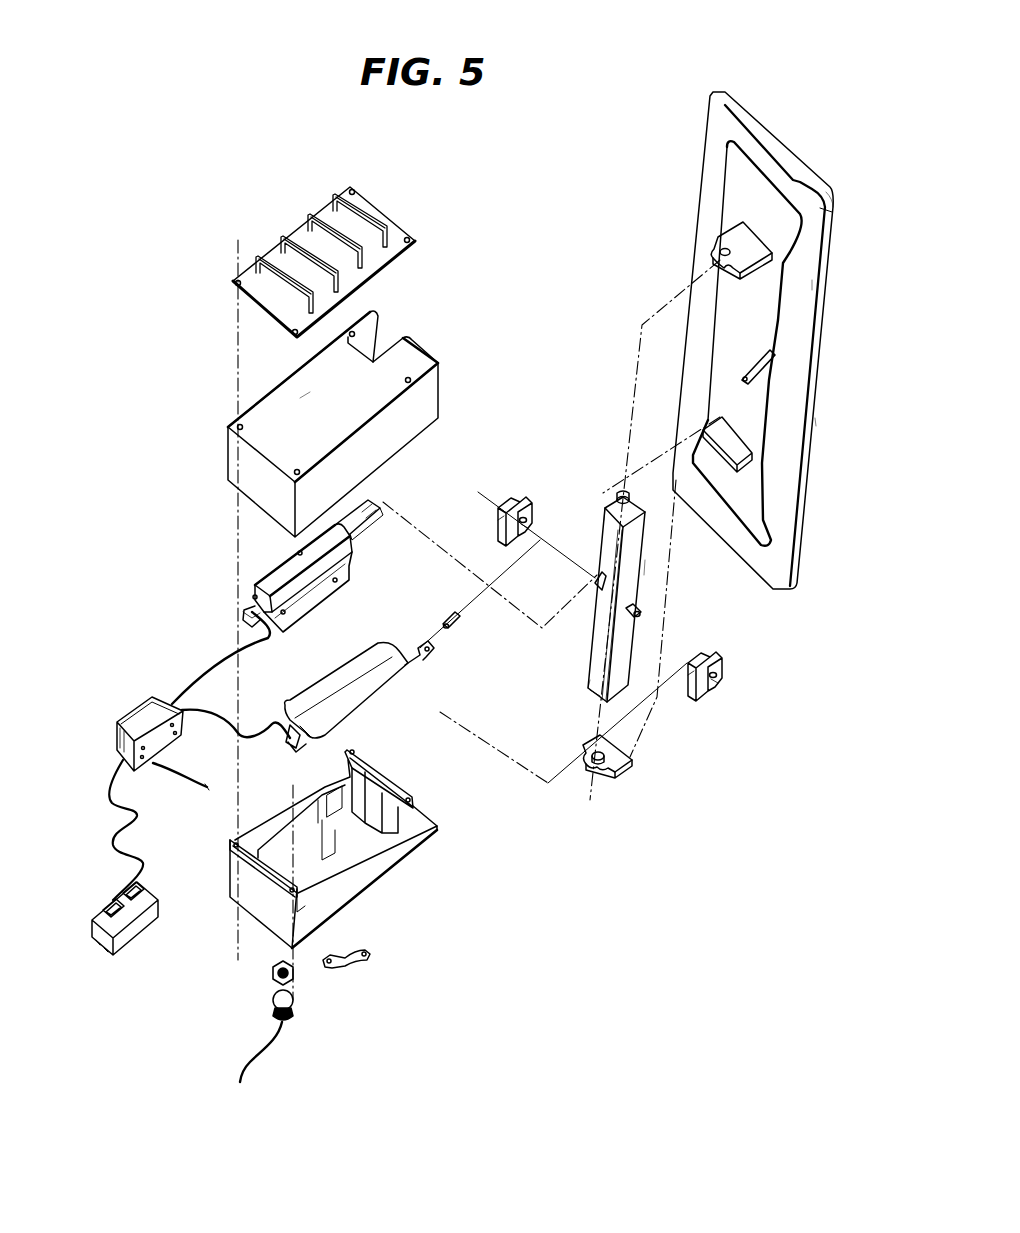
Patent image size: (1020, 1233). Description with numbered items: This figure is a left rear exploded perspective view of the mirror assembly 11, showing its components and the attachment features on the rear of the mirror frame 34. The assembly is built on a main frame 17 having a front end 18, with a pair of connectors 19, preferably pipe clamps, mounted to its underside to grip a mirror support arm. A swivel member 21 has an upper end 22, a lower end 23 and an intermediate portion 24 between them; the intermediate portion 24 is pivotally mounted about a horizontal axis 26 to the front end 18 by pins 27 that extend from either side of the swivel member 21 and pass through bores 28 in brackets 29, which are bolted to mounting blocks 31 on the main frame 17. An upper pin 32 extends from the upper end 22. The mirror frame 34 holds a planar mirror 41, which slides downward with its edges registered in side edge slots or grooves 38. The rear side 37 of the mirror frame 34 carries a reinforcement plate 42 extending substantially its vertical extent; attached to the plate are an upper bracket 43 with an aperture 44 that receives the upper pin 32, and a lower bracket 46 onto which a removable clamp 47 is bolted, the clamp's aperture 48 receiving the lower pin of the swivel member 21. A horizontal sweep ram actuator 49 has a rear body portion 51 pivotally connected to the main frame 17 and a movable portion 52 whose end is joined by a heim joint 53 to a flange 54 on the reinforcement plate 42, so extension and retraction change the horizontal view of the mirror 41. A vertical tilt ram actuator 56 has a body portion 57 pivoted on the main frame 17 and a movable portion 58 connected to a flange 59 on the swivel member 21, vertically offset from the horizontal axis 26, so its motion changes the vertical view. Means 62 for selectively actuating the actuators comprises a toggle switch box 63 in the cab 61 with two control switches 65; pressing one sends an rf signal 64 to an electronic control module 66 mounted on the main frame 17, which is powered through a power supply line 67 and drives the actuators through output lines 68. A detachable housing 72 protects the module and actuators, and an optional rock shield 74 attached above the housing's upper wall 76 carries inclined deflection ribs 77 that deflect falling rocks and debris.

The mirror assembly 11 is at (508, 982).
The main frame 17 is at (357, 827).
The front end 18 is at (440, 817).
The connectors 19 is at (340, 978).
The swivel member 21 is at (610, 572).
The upper end 22 is at (606, 530).
The lower end 23 is at (588, 680).
The intermediate portion 24 is at (650, 570).
The horizontal axis 26 is at (478, 492).
The pins 27 is at (642, 612).
The bores 28 is at (522, 532).
The brackets 29 is at (498, 528).
The mounting blocks 31 is at (365, 750).
The upper pin 32 is at (622, 494).
The mirror frame 34 is at (763, 340).
The rear side 37 is at (808, 285).
The side edge slots or grooves 38 is at (815, 422).
The planar mirror 41 is at (836, 186).
The reinforcement plate 42 is at (728, 150).
The upper bracket 43 is at (727, 227).
The aperture 44 is at (707, 223).
The lower bracket 46 is at (752, 456).
The removable clamp 47 is at (630, 772).
The aperture 48 is at (600, 785).
The horizontal sweep ram actuator 49 is at (358, 699).
The rear body portion 51 is at (310, 752).
The movable portion 52 is at (405, 670).
The heim joint 53 is at (445, 617).
The flange 54 is at (752, 357).
The vertical tilt ram actuator 56 is at (302, 549).
The body portion 57 is at (246, 606).
The movable portion 58 is at (384, 504).
The flange 59 is at (590, 583).
The cab 61 is at (118, 966).
The means for selectively actuating 62 is at (168, 857).
The toggle switch box 63 is at (100, 915).
The rf signal 64 is at (113, 833).
The control switches 65 is at (145, 905).
The electronic control module 66 is at (124, 704).
The power supply line 67 is at (190, 785).
The output lines 68 is at (208, 672).
The detachable housing 72 is at (319, 424).
The rock shield 74 is at (345, 238).
The upper wall 76 is at (300, 398).
The inclined deflection ribs 77 is at (336, 195).